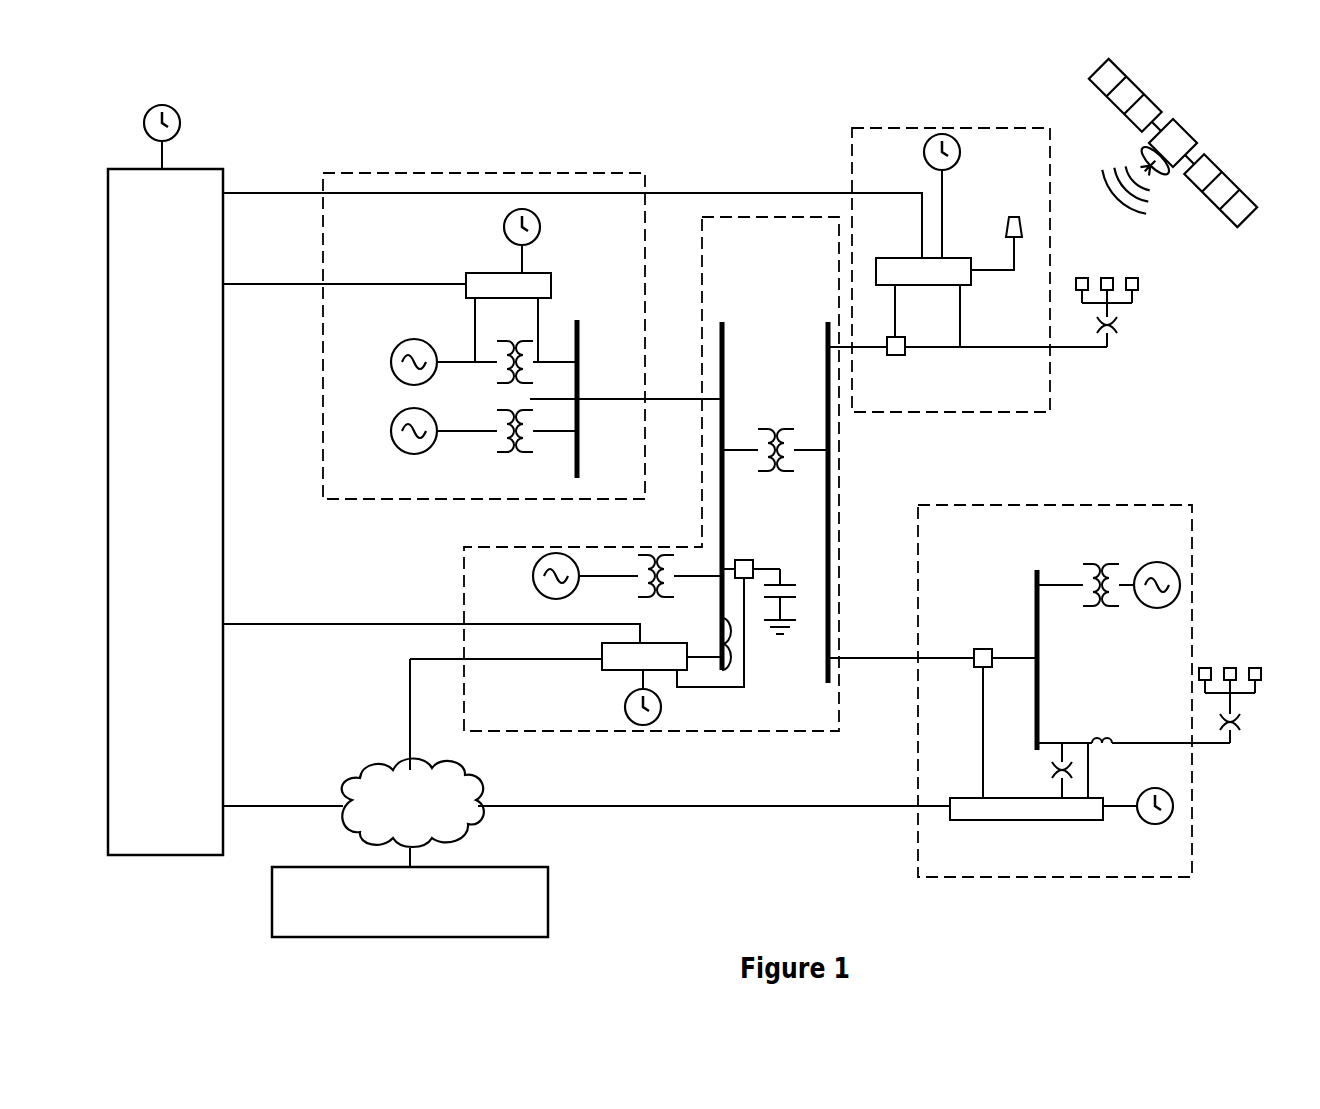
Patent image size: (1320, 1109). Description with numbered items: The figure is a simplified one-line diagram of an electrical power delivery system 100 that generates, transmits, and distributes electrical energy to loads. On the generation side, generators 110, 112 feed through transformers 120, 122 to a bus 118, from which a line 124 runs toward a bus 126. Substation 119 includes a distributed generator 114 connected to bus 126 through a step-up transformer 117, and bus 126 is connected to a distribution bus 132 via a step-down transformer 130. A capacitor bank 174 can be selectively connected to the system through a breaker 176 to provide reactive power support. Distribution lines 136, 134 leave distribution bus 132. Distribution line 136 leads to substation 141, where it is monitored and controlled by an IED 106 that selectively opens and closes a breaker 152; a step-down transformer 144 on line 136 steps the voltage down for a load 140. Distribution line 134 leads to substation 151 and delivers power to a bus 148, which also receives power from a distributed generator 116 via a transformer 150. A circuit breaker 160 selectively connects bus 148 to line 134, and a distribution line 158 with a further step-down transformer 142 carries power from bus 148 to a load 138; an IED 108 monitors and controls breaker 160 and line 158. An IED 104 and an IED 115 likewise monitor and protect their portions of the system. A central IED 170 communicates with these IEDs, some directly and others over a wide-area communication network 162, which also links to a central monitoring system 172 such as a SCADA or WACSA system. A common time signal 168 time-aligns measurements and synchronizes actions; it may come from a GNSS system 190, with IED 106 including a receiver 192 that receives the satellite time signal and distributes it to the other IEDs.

The electrical power delivery system 100 is at (1235, 395).
The IED 104 is at (488, 273).
The IED 106 is at (893, 258).
The IED 108 is at (1077, 821).
The generator 110 is at (391, 364).
The generator 112 is at (391, 433).
The generator 114 is at (533, 580).
The IED 115 is at (610, 670).
The generator 116 is at (1150, 608).
The step-up transformer 117 is at (642, 597).
The bus 118 is at (580, 452).
The substation 119 is at (463, 575).
The transformer 120 is at (497, 383).
The transformer 122 is at (505, 453).
The line 124 is at (660, 400).
The bus 126 is at (725, 470).
The step-down transformer 130 is at (776, 428).
The distribution bus 132 is at (826, 646).
The distribution line 134 is at (932, 659).
The distribution line 136 is at (868, 348).
The load 138 is at (1230, 666).
The load 140 is at (1142, 282).
The substation 141 is at (1027, 413).
The step-down transformer 142 is at (1242, 726).
The step-down transformer 144 is at (1120, 324).
The bus 148 is at (1034, 571).
The transformer 150 is at (1095, 562).
The substation 151 is at (1128, 878).
The breaker 152 is at (903, 356).
The distribution line 158 is at (1128, 742).
The circuit breaker 160 is at (980, 647).
The communication network 162 is at (395, 832).
The common time signal 168 is at (182, 121).
The central IED 170 is at (150, 534).
The central monitoring system 172 is at (395, 927).
The capacitor bank 174 is at (790, 585).
The breaker 176 is at (749, 560).
The GNSS system 190 is at (1200, 126).
The receiver 192 is at (1008, 222).